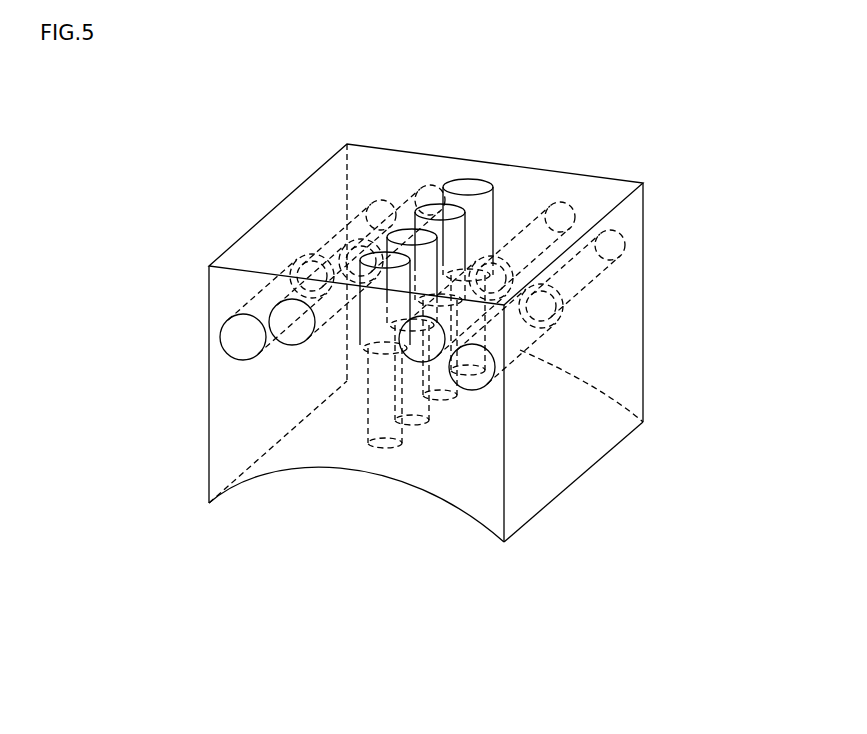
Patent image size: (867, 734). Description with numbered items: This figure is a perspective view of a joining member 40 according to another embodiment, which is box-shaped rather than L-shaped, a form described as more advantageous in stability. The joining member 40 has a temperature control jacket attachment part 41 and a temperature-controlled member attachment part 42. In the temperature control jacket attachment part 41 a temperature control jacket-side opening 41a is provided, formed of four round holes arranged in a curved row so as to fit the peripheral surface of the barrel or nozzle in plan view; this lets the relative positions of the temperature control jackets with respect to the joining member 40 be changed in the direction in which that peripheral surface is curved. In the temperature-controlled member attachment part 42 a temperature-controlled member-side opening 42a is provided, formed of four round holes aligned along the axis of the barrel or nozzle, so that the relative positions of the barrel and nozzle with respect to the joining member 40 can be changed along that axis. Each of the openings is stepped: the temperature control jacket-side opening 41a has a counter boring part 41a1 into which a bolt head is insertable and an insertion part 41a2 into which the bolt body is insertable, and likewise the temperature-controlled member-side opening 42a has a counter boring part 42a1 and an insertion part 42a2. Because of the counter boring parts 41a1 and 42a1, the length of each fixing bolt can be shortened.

The joining member 40 is at (537, 98).
The temperature control jacket attachment part 41 is at (643, 262).
The temperature control jacket-side opening 41a is at (291, 330).
The counter boring part 41a1 is at (522, 353).
The insertion part 41a2 is at (590, 287).
The temperature-controlled member attachment part 42 is at (379, 363).
The temperature-controlled member-side opening 42a is at (386, 258).
The counter boring part 42a1 is at (358, 338).
The insertion part 42a2 is at (367, 430).